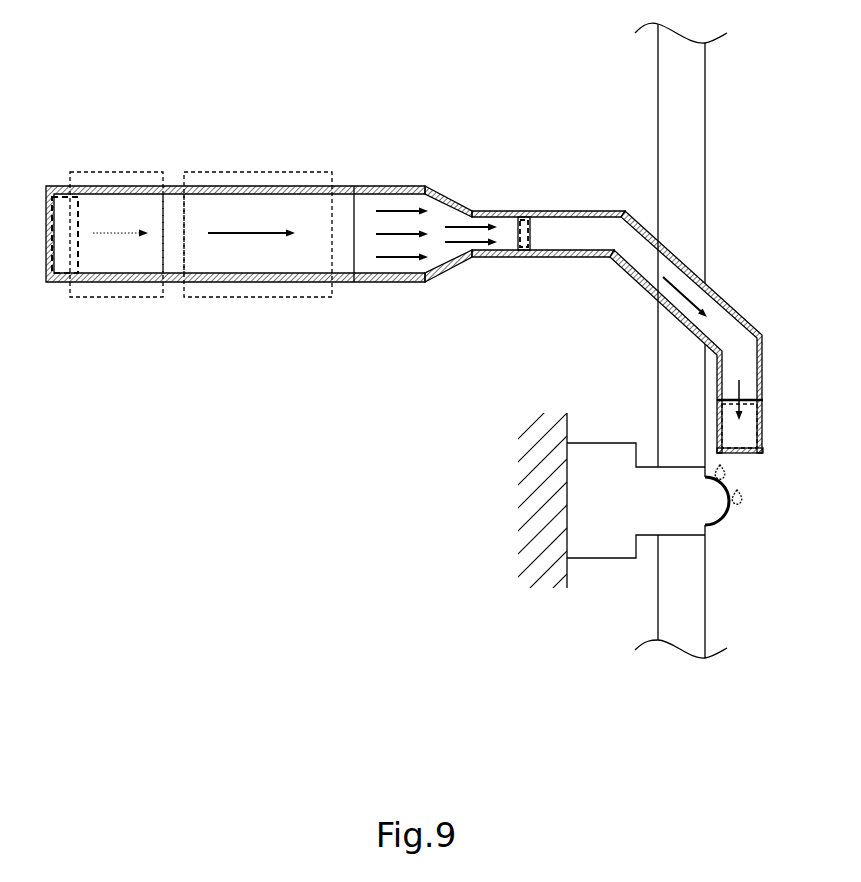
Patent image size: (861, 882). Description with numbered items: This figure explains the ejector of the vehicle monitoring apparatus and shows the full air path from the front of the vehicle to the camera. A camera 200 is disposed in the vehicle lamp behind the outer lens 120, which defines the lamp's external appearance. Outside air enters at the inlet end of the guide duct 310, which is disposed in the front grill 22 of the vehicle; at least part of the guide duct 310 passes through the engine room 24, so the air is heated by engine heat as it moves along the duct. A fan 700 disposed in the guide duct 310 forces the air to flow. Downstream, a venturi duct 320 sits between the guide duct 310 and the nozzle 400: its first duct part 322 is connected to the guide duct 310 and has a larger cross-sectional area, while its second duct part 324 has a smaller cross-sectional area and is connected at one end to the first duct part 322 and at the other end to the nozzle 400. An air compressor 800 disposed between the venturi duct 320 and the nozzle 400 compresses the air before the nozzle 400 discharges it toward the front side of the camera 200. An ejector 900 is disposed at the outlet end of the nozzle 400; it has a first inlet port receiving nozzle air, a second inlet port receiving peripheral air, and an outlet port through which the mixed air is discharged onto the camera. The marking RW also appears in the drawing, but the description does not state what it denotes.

The front grill 22 is at (115, 172).
The engine room 24 is at (258, 172).
The guide duct 310 is at (173, 186).
The venturi duct 320 is at (499, 187).
The first duct part 322 is at (388, 186).
The second duct part 324 is at (548, 195).
The nozzle 400 is at (718, 297).
The fan 700 is at (66, 276).
The air compressor 800 is at (523, 257).
The ejector 900 is at (765, 425).
The outer lens 120 is at (706, 150).
The camera 200 is at (600, 580).
The rain water RW is at (745, 497).